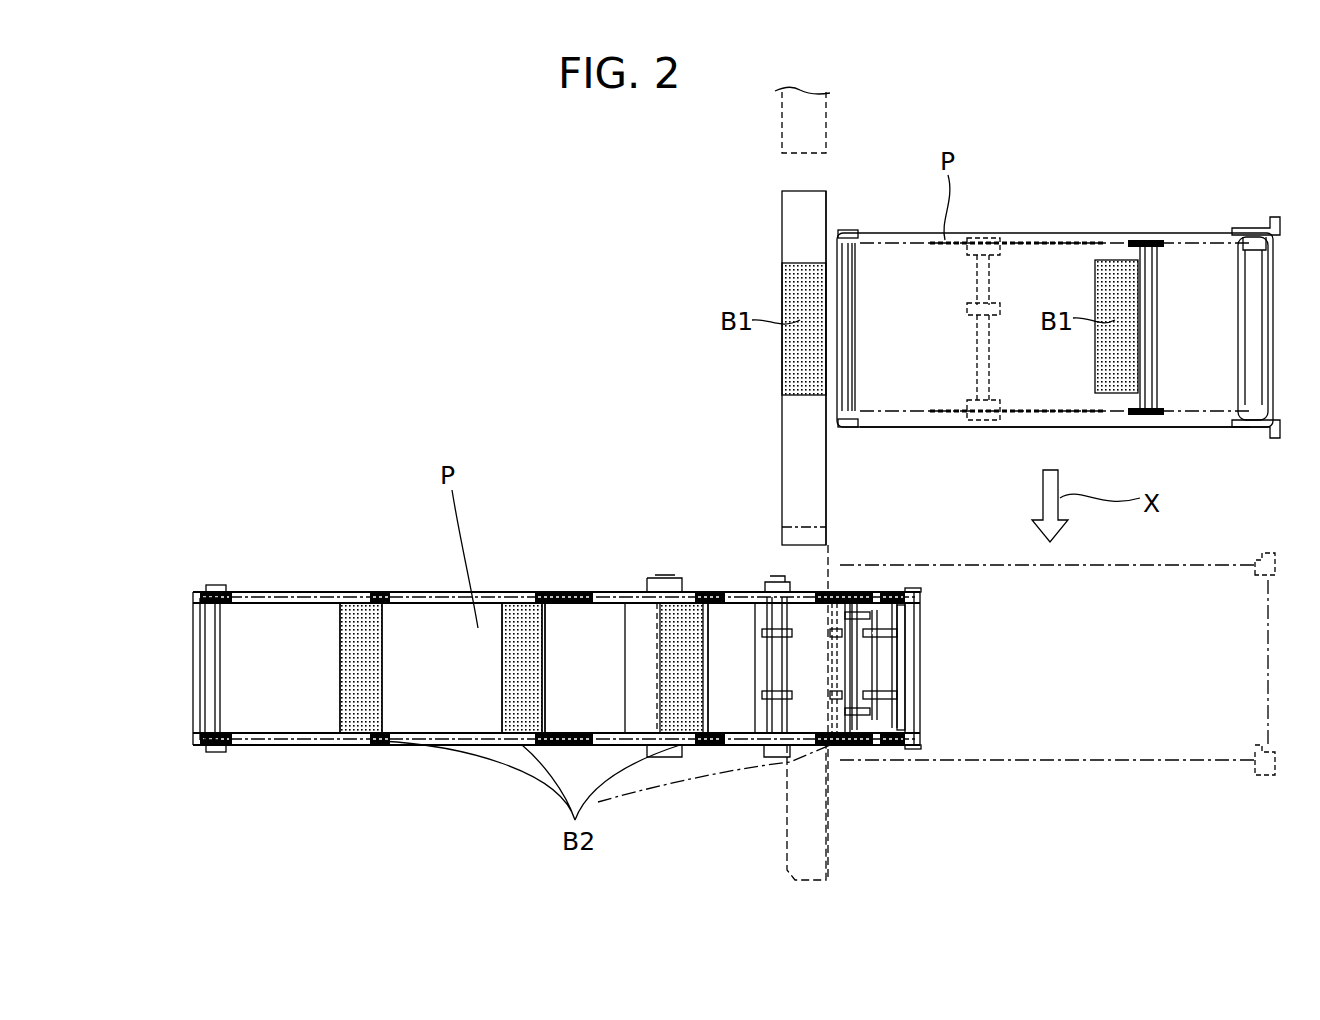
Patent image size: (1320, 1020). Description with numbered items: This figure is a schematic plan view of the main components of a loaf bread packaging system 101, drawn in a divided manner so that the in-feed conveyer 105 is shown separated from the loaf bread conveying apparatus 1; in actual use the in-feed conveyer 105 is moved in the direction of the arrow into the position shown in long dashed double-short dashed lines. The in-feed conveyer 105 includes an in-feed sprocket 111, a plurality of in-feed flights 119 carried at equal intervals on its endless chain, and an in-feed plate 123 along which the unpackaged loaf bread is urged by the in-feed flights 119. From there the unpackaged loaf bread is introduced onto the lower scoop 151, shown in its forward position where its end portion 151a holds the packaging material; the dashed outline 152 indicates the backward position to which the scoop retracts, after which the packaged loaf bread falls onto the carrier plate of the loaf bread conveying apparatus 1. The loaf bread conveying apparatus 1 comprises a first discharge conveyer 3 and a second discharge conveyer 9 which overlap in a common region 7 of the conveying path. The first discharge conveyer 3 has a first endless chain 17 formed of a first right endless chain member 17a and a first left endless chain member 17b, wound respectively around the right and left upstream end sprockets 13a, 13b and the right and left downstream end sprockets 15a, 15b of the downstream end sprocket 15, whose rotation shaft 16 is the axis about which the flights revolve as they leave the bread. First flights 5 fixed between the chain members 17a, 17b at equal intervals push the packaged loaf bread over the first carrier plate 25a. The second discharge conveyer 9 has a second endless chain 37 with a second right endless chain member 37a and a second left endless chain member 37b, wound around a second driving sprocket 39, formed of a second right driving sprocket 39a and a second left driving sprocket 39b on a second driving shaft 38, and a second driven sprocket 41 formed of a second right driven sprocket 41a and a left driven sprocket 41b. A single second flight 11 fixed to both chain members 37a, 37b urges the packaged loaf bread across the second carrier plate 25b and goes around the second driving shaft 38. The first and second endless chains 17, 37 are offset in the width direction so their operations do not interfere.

The loaf bread conveying apparatus 1 is at (503, 378).
The first discharge conveyer 3 is at (386, 562).
The first flight 5 is at (195, 688).
The common region 7 is at (890, 768).
The second discharge conveyer 9 is at (913, 675).
The second flight 11 is at (900, 718).
The right upstream end sprocket 13a is at (878, 620).
The left upstream end sprocket 13b is at (890, 740).
The downstream end sprocket 15 is at (245, 470).
The right downstream end sprocket 15a is at (232, 748).
The left downstream end sprocket 15b is at (212, 752).
The rotation shaft 16 is at (226, 745).
The first endless chain 17 is at (615, 468).
The first right endless chain member 17a is at (557, 630).
The first left endless chain member 17b is at (598, 630).
The first carrier plate 25a is at (418, 625).
The second carrier plate 25b is at (860, 742).
The second endless chain 37 is at (968, 484).
The second right endless chain member 37a is at (845, 640).
The second left endless chain member 37b is at (833, 640).
The second driving shaft 38 is at (778, 575).
The second driving sprocket 39 is at (738, 468).
The second right driving sprocket 39a is at (735, 650).
The second left driving sprocket 39b is at (688, 650).
The second driven sprocket 41 is at (983, 605).
The second right driven sprocket 41a is at (895, 632).
The left driven sprocket 41b is at (893, 690).
The loaf bread packaging system 101 is at (430, 255).
The in-feed conveyer 105 is at (1157, 190).
The in-feed sprocket 111 is at (1020, 427).
The in-feed flight 119 is at (1118, 268).
The in-feed plate 123 is at (1203, 290).
The lower scoop 151 is at (800, 222).
The end portion of the lower scoop 151a is at (828, 525).
The backward position of the scoop 152 is at (795, 128).